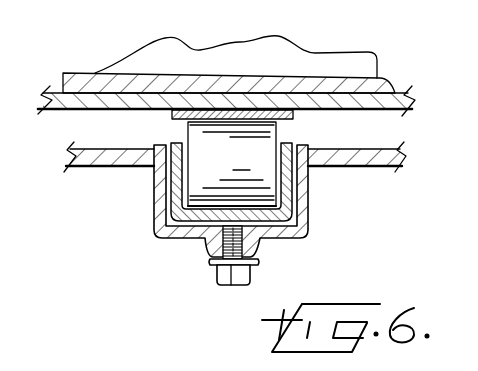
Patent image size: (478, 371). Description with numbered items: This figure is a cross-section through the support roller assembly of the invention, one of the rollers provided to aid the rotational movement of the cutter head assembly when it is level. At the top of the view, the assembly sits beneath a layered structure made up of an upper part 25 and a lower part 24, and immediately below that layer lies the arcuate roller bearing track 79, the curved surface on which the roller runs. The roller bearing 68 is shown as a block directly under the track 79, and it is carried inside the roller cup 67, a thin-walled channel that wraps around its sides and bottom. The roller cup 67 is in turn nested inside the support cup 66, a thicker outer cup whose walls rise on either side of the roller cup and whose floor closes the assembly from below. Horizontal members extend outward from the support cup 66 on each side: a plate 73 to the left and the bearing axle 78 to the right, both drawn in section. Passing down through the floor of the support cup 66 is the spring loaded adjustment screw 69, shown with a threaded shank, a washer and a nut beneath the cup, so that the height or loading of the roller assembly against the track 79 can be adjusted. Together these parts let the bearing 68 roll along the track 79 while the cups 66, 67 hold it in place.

The lower plate layer 24 is at (226, 70).
The upper plate layer 25 is at (229, 51).
The arcuate roller bearing track 79 is at (200, 128).
The roller bearing 68 is at (268, 159).
The support cup 66 is at (271, 201).
The roller cup 67 is at (278, 188).
The left support plate 73 is at (97, 177).
The bearing axle 78 is at (255, 172).
The spring loaded adjustment screw 69 is at (197, 267).